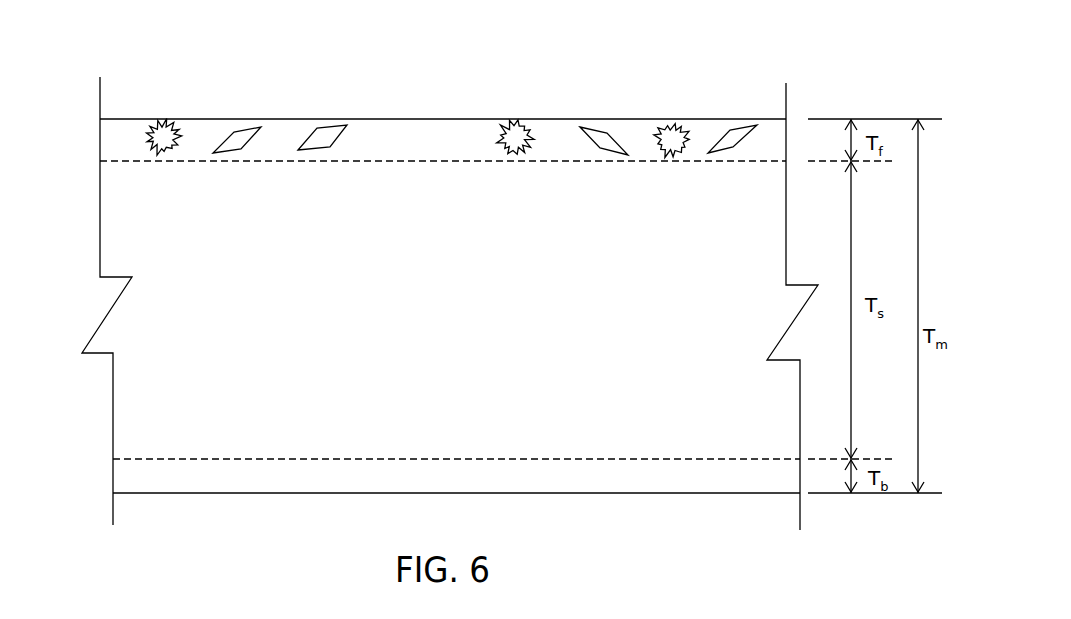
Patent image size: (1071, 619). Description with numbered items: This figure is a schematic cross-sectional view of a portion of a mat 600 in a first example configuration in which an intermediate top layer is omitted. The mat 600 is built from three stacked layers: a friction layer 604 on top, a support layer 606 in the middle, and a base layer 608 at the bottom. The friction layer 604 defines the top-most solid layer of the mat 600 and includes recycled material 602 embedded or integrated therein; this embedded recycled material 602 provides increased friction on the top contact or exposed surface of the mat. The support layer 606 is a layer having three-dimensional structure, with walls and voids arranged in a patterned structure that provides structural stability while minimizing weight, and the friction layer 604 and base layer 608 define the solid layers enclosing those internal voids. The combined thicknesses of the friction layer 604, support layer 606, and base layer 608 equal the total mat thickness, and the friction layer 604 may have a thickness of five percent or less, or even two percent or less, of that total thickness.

The mat 600 is at (132, 78).
The recycled material 602 is at (237, 138).
The friction layer 604 is at (440, 151).
The support layer 606 is at (445, 336).
The base layer 608 is at (446, 487).